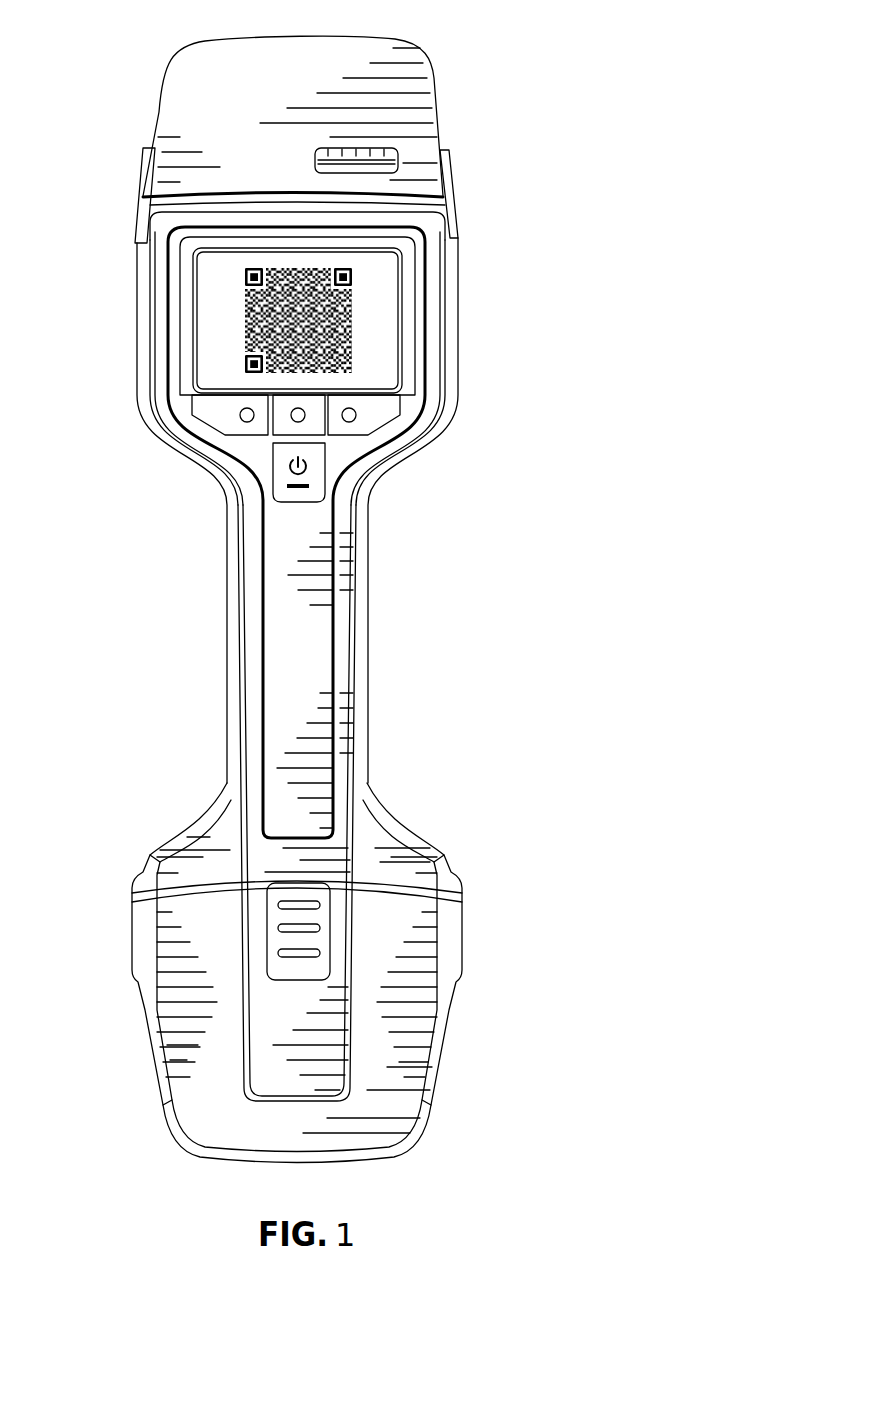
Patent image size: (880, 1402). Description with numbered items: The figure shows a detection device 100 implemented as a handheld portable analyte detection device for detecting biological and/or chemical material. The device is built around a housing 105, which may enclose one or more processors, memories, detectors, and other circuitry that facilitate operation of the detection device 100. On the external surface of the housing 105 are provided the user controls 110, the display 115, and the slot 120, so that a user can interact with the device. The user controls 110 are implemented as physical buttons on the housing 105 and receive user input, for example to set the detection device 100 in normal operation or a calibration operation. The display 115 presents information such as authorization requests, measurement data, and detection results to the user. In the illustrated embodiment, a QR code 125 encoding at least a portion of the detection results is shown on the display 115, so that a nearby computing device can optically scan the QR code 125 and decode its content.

The detection device 100 is at (128, 42).
The housing 105 is at (457, 291).
The user controls 110 is at (240, 418).
The display 115 is at (383, 340).
The slot 120 is at (395, 160).
The QR code 125 is at (243, 325).